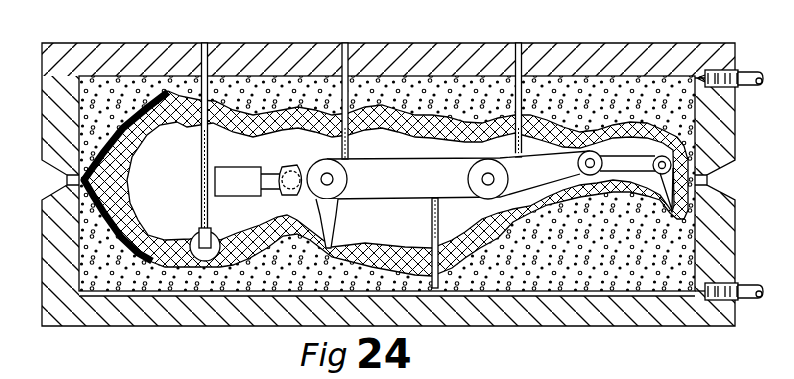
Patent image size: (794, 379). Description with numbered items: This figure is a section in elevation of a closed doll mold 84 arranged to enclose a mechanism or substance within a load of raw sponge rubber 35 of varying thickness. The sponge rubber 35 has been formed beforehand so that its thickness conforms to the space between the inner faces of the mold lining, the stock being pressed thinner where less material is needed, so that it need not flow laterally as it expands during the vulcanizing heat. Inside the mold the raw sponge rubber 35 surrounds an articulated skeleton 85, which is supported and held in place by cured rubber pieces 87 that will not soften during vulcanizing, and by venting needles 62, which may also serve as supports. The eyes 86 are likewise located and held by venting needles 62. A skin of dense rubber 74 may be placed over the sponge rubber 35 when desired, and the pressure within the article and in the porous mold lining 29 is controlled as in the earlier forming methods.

The porous mold lining 29 is at (113, 88).
The venting needle 62 is at (205, 44).
The closed doll mold 84 is at (636, 44).
The skin of dense rubber 74 is at (137, 140).
The raw sponge rubber 35 is at (270, 141).
The articulated skeleton 85 is at (444, 180).
The cured rubber pieces 87 is at (336, 218).
The eyes 86 is at (200, 238).